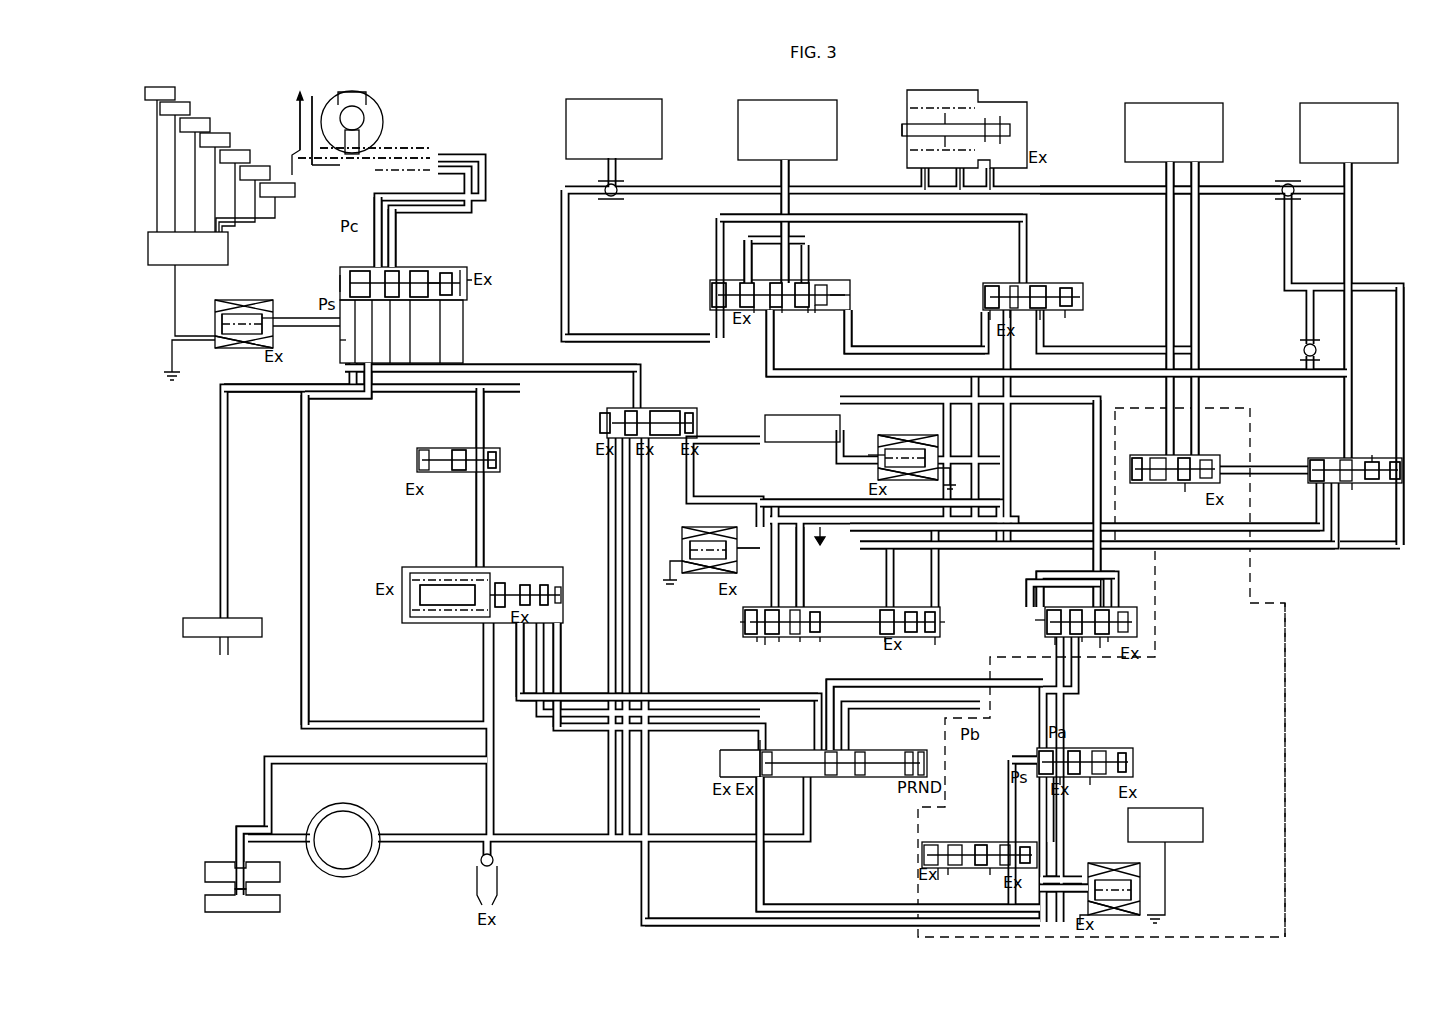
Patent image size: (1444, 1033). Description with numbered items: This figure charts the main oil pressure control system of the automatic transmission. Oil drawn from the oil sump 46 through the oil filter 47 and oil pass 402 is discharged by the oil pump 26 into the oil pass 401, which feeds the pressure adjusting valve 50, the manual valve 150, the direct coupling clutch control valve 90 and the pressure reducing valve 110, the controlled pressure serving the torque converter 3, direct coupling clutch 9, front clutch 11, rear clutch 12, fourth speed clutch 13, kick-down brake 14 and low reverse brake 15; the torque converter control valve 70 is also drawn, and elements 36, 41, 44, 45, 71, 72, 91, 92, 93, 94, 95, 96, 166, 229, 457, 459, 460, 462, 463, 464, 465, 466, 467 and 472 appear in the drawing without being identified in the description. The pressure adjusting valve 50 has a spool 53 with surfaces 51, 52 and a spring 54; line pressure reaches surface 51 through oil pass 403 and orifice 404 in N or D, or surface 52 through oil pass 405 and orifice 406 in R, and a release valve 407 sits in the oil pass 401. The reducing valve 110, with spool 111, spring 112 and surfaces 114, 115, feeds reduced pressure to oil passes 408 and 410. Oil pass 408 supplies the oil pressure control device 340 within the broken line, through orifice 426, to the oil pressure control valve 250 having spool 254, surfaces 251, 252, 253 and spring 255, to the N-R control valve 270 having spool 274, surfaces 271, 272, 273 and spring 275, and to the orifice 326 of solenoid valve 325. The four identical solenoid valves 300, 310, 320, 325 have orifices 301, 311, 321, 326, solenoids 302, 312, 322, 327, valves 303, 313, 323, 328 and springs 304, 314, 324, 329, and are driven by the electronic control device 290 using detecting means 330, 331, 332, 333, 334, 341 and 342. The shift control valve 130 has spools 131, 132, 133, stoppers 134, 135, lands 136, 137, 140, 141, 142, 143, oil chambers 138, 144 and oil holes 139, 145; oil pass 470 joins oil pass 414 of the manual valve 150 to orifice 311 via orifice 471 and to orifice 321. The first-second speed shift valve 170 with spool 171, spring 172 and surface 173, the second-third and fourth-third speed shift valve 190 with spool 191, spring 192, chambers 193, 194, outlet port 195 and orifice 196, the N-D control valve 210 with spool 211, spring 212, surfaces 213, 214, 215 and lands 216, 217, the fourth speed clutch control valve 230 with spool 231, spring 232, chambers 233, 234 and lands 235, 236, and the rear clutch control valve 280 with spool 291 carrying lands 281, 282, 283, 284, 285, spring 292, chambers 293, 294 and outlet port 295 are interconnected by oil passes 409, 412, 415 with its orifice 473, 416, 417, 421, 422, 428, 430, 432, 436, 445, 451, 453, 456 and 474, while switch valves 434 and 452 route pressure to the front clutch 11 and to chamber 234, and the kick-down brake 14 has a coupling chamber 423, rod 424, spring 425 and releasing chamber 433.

The torque converter 3 is at (372, 108).
The direct coupling clutch 9 is at (298, 95).
The front clutch 11 is at (596, 95).
The rear clutch 12 is at (771, 95).
The 4th speed clutch 13 is at (1328, 100).
The kick-down brake 14 is at (995, 96).
The low reverse brake 15 is at (1158, 100).
The oil pump 26 is at (347, 877).
The lock-up clutch 36 is at (300, 116).
The input shaft 41 is at (300, 135).
The oil passage 44 is at (408, 152).
The oil passage 45 is at (350, 175).
The oil sump 46 is at (280, 905).
The oil filter 47 is at (280, 877).
The pressure adjusting valve 50 is at (518, 560).
The pressure receiving surface 51 is at (547, 583).
The pressure receiving surface 52 is at (528, 583).
The spool 53 is at (504, 580).
The spring 54 is at (450, 607).
The torque converter control valve 70 is at (488, 446).
The spool 71 is at (493, 472).
The spring 72 is at (450, 472).
The direct coupling clutch control valve 90 is at (432, 262).
The spool land 91 is at (412, 268).
The spool land 92 is at (352, 268).
The spool land 93 is at (386, 268).
The spool land 94 is at (432, 268).
The spring 95 is at (452, 270).
The port 96 is at (340, 280).
The pressure reducing valve 110 is at (655, 398).
The spool 111 is at (662, 410).
The spring 112 is at (688, 410).
The pressure receiving surface 114 is at (620, 408).
The pressure receiving surface 115 is at (643, 410).
The shift control valve 130 is at (808, 640).
The spool 131 is at (766, 651).
The spool 132 is at (820, 640).
The spool 133 is at (919, 633).
The stopper 134 is at (799, 640).
The stopper 135 is at (871, 644).
The land 136 is at (750, 607).
The land 137 is at (775, 640).
The oil chamber 138 is at (742, 622).
The oil hole 139 is at (758, 640).
The land 140 is at (775, 608).
The land 141 is at (815, 610).
The land 142 is at (893, 608).
The land 143 is at (934, 650).
The oil chamber 144 is at (944, 619).
The oil hole 145 is at (932, 610).
The manual valve 150 is at (878, 745).
The oil passage 166 is at (810, 567).
The 1st-2nd speed shift valve 170 is at (1210, 452).
The spool 171 is at (1183, 456).
The spring 172 is at (1191, 498).
The pressure receiving surface 173 is at (1135, 456).
The 2nd-3rd and 4th-3rd speed shift valve 190 is at (1085, 283).
The spool 191 is at (1035, 284).
The spring 192 is at (1081, 319).
The oil pressure chamber 193 is at (985, 283).
The oil pressure chamber 194 is at (1076, 298).
The oil outlet port 195 is at (1022, 319).
The orifice 196 is at (988, 320).
The N-D control valve 210 is at (1140, 600).
The spool 211 is at (1078, 608).
The spring 212 is at (1112, 640).
The pressure receiving surface 213 is at (1041, 640).
The pressure receiving surface 214 is at (1086, 640).
The pressure receiving surface 215 is at (1103, 650).
The land 216 is at (1045, 620).
The land 217 is at (1105, 608).
The port 229 is at (1054, 323).
The 4th speed clutch control valve 230 is at (1378, 488).
The spool 231 is at (1376, 460).
The spring 232 is at (1376, 442).
The oil pressure chamber 233 is at (1312, 458).
The oil pressure chamber 234 is at (1403, 473).
The land 235 is at (1309, 399).
The land 236 is at (1359, 494).
The oil pressure control valve 250 is at (1133, 752).
The pressure receiving surface 251 is at (1040, 748).
The pressure receiving surface 252 is at (1076, 795).
The pressure receiving surface 253 is at (1085, 775).
The spool 254 is at (1106, 795).
The spring 255 is at (1120, 750).
The N-R control valve 270 is at (970, 840).
The pressure receiving surface 271 is at (1032, 858).
The pressure receiving surface 272 is at (994, 880).
The pressure receiving surface 273 is at (956, 874).
The spool 274 is at (990, 843).
The spring 275 is at (949, 883).
The rear clutch control valve 280 is at (808, 265).
The land 281 is at (740, 282).
The land 282 is at (751, 325).
The land 283 is at (786, 318).
The land 284 is at (829, 324).
The land 285 is at (815, 283).
The electronic control device 290 is at (229, 250).
The spool 291 is at (792, 281).
The spring 292 is at (823, 318).
The oil pressure chamber 293 is at (712, 300).
The oil pressure chamber 294 is at (850, 300).
The oil outlet port 295 is at (798, 325).
The solenoid valve 300 is at (228, 298).
The orifice 301 is at (278, 328).
The solenoid 302 is at (222, 341).
The valve 303 is at (252, 341).
The spring 304 is at (212, 345).
The solenoid valve 310 is at (890, 430).
The orifice 311 is at (868, 455).
The solenoid 312 is at (908, 474).
The valve 313 is at (878, 472).
The spring 314 is at (908, 433).
The solenoid valve 320 is at (706, 532).
The orifice 321 is at (748, 545).
The solenoid 322 is at (702, 575).
The valve 323 is at (745, 557).
The spring 324 is at (693, 570).
The solenoid valve 325 is at (1090, 850).
The orifice 326 is at (1064, 874).
The solenoid 327 is at (1114, 917).
The valve 328 is at (1103, 871).
The spring 329 is at (1137, 871).
The engine load detecting means 330 is at (160, 159).
The engine rotation detecting means 331 is at (175, 167).
The kick-down drum rotation detecting means 332 is at (195, 175).
The transfer driven gear rotation detecting means 333 is at (215, 182).
The oil temperature measuring means 334 is at (235, 191).
The oil pressure control device 340 is at (1285, 738).
The select lever position detecting means 341 is at (244, 199).
The auxiliary switch position detecting means 342 is at (255, 207).
The oil pass 401 is at (304, 422).
The oil pass 402 is at (243, 827).
The oil pass 403 is at (712, 694).
The orifice 404 is at (552, 650).
The oil pass 405 is at (622, 330).
The orifice 406 is at (528, 655).
The release valve 407 is at (493, 858).
The oil pass 408 is at (643, 453).
The oil pass 409 is at (1019, 750).
The oil pass 410 is at (592, 367).
The oil pass 412 is at (898, 533).
The oil pass 414 is at (900, 684).
The oil pass 415 is at (1037, 603).
The oil pass 416 is at (1094, 446).
The oil pass 417 is at (788, 177).
The oil pass 421 is at (755, 867).
The oil pass 422 is at (886, 347).
The oil pressure chamber 423 is at (1006, 180).
The rod 424 is at (905, 130).
The spring 425 is at (916, 179).
The orifice 426 is at (1043, 900).
The oil pass 428 is at (1198, 333).
The oil pass 430 is at (918, 560).
The oil pass 432 is at (1159, 185).
The oil pressure chamber 433 is at (961, 179).
The switch valve 434 is at (611, 197).
The oil pass 436 is at (840, 370).
The oil pass 445 is at (1350, 240).
The oil pass 451 is at (1403, 333).
The switch valve 452 is at (1291, 184).
The oil pass 453 is at (1175, 240).
The oil pass 456 is at (898, 220).
The oil passage 457 is at (782, 250).
The oil passage 459 is at (484, 524).
The oil passage 460 is at (485, 423).
The oil cooler 462 is at (248, 617).
The oil passage 463 is at (495, 388).
The oil passage 464 is at (340, 342).
The oil passage 465 is at (375, 212).
The oil passage 466 is at (405, 220).
The oil passage 467 is at (368, 395).
The oil pass 470 is at (800, 502).
The orifice 471 is at (823, 525).
The check valve 472 is at (821, 534).
The orifice 473 is at (1105, 582).
The oil pass 474 is at (1038, 578).